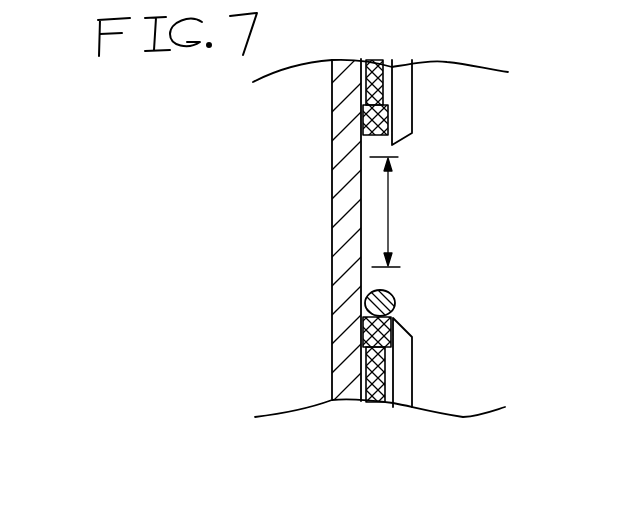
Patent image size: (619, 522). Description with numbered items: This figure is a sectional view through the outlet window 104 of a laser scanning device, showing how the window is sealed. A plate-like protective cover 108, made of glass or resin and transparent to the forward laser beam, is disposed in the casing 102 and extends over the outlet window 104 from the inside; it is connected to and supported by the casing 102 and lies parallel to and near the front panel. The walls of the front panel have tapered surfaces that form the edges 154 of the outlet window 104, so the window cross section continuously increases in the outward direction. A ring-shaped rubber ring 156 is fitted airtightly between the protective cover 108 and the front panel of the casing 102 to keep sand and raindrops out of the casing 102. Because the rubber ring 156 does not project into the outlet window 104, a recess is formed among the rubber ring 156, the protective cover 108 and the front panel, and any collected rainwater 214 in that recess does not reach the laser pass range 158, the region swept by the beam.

The casing 102 is at (410, 108).
The outlet window 104 is at (455, 252).
The protective cover 108 is at (332, 243).
The edges of the outlet window 154 is at (394, 322).
The rubber ring 156 is at (386, 386).
The laser pass range 158 is at (388, 205).
The collected rainwater 214 is at (393, 300).